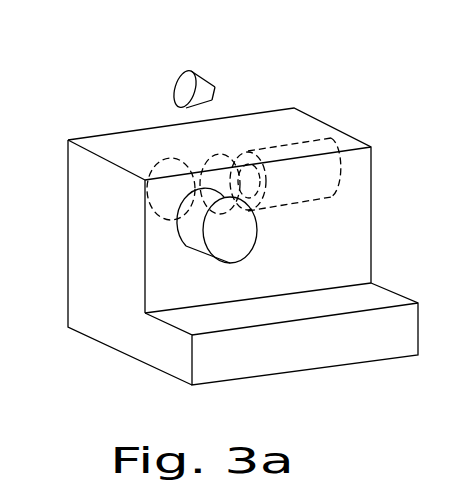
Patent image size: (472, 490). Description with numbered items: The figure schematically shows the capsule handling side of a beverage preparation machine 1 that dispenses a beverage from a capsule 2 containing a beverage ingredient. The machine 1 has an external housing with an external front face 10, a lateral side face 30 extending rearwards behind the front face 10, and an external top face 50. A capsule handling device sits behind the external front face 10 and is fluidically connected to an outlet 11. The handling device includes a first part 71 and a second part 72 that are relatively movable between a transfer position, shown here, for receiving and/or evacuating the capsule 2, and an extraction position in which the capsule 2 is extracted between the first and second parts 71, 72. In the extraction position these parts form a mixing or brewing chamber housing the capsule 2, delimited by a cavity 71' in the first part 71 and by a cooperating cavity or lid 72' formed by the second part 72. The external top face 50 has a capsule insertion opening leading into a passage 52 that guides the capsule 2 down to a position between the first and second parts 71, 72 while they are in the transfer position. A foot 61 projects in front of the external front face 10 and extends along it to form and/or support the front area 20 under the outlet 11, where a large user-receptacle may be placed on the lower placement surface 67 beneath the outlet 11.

The machine 1 is at (80, 106).
The capsule 2 is at (204, 87).
The external front face 10 is at (349, 243).
The outlet 11 is at (237, 262).
The front area 20 is at (170, 282).
The external lateral side face 30 is at (93, 200).
The external top face 50 is at (278, 122).
The passage 52 is at (215, 182).
The foot 61 is at (369, 302).
The lower placement surface 67 is at (217, 310).
The first part 71 is at (304, 149).
The cavity 71' is at (275, 196).
The second part 72 is at (157, 176).
The cooperating cavity or lid 72' is at (214, 171).